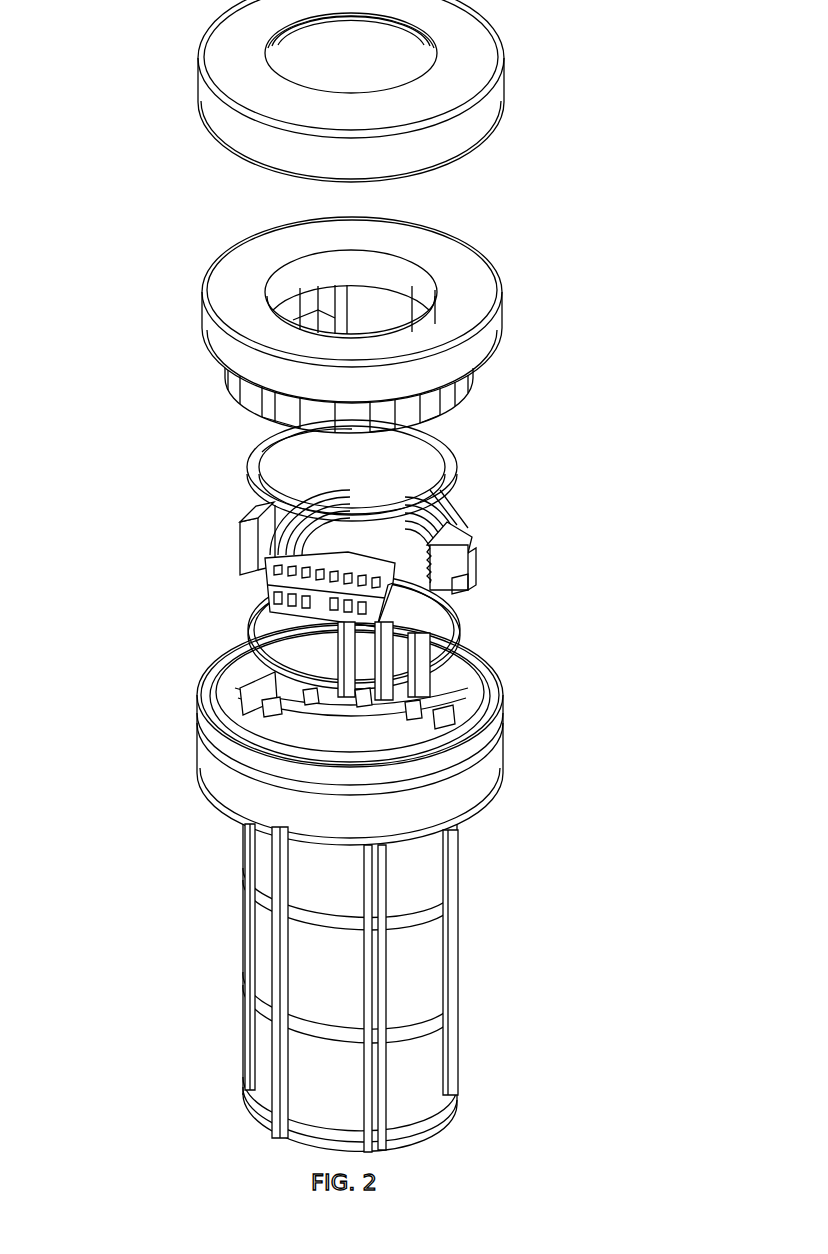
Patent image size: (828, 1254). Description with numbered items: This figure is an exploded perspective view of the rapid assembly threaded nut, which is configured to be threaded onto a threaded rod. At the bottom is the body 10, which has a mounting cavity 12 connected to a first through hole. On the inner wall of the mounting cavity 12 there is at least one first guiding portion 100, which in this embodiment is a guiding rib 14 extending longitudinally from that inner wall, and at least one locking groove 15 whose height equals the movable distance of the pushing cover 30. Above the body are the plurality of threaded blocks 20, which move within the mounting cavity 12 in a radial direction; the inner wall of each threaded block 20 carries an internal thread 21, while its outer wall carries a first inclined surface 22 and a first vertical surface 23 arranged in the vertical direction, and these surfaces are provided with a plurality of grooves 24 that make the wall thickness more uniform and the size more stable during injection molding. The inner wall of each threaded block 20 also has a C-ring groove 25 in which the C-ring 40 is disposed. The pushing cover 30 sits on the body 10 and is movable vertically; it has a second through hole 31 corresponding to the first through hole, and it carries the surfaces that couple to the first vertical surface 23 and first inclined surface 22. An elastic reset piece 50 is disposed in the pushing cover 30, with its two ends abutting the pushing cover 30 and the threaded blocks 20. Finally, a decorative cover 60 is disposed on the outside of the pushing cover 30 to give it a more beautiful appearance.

The body 10 is at (428, 870).
The mounting cavity 12 is at (360, 716).
The guiding rib 14 is at (382, 655).
The locking groove 15 is at (255, 698).
The threaded block 20 is at (394, 564).
The internal thread 21 is at (442, 517).
The first inclined surface 22 is at (467, 552).
The first vertical surface 23 is at (468, 573).
The grooves 24 is at (267, 585).
The C-ring groove 25 is at (242, 530).
The pushing cover 30 is at (426, 323).
The second through hole 31 is at (398, 283).
The C-ring 40 is at (246, 557).
The elastic reset piece 50 is at (452, 440).
The decorative cover 60 is at (473, 107).
The first guiding portion 100 is at (505, 657).